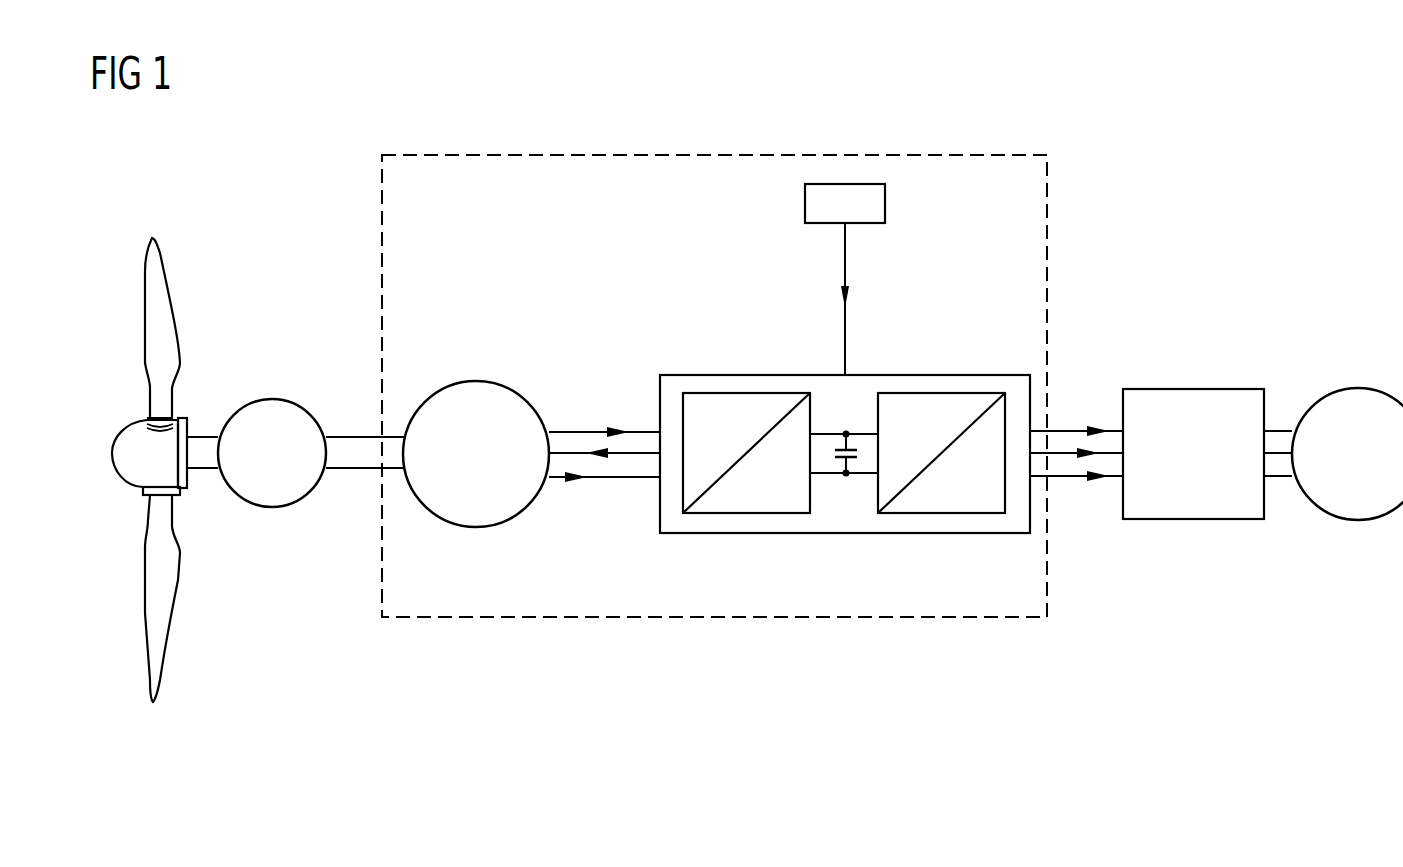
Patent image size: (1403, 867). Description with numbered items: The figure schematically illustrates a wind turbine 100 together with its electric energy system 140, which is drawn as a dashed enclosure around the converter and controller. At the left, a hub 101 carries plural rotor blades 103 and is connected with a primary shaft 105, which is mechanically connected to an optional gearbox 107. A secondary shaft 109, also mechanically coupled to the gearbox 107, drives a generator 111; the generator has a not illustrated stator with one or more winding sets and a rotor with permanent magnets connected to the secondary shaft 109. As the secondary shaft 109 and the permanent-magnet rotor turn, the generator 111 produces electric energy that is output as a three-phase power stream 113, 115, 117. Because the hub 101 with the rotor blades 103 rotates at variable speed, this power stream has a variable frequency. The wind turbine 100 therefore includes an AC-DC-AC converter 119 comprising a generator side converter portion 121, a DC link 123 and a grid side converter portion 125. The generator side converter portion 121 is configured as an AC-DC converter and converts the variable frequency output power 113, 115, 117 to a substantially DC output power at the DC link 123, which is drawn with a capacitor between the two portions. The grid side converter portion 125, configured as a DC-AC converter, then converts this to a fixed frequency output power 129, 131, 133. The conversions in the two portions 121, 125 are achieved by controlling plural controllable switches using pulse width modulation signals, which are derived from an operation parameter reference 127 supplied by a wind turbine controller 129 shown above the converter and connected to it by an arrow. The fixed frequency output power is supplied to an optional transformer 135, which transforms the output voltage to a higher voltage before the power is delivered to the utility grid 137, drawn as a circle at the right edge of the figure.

The wind turbine 100 is at (1270, 110).
The hub 101 is at (130, 425).
The rotor blades 103 is at (170, 310).
The primary shaft 105 is at (203, 447).
The gearbox 107 is at (275, 398).
The secondary shaft 109 is at (343, 447).
The generator 111 is at (477, 380).
The three-phase power stream 113 is at (625, 428).
The three-phase power stream 115 is at (597, 456).
The three-phase power stream 117 is at (578, 480).
The AC-DC-AC converter 119 is at (845, 535).
The generator side converter portion 121 is at (745, 395).
The DC link 123 is at (855, 405).
The grid side converter portion 125 is at (938, 395).
The operation parameter reference 127 is at (840, 298).
The wind turbine controller 129 is at (885, 202).
The fixed frequency output power 131 is at (1082, 450).
The fixed frequency output power 133 is at (1098, 482).
The transformer 135 is at (1193, 389).
The utility grid 137 is at (1357, 389).
The electric energy system 140 is at (710, 153).